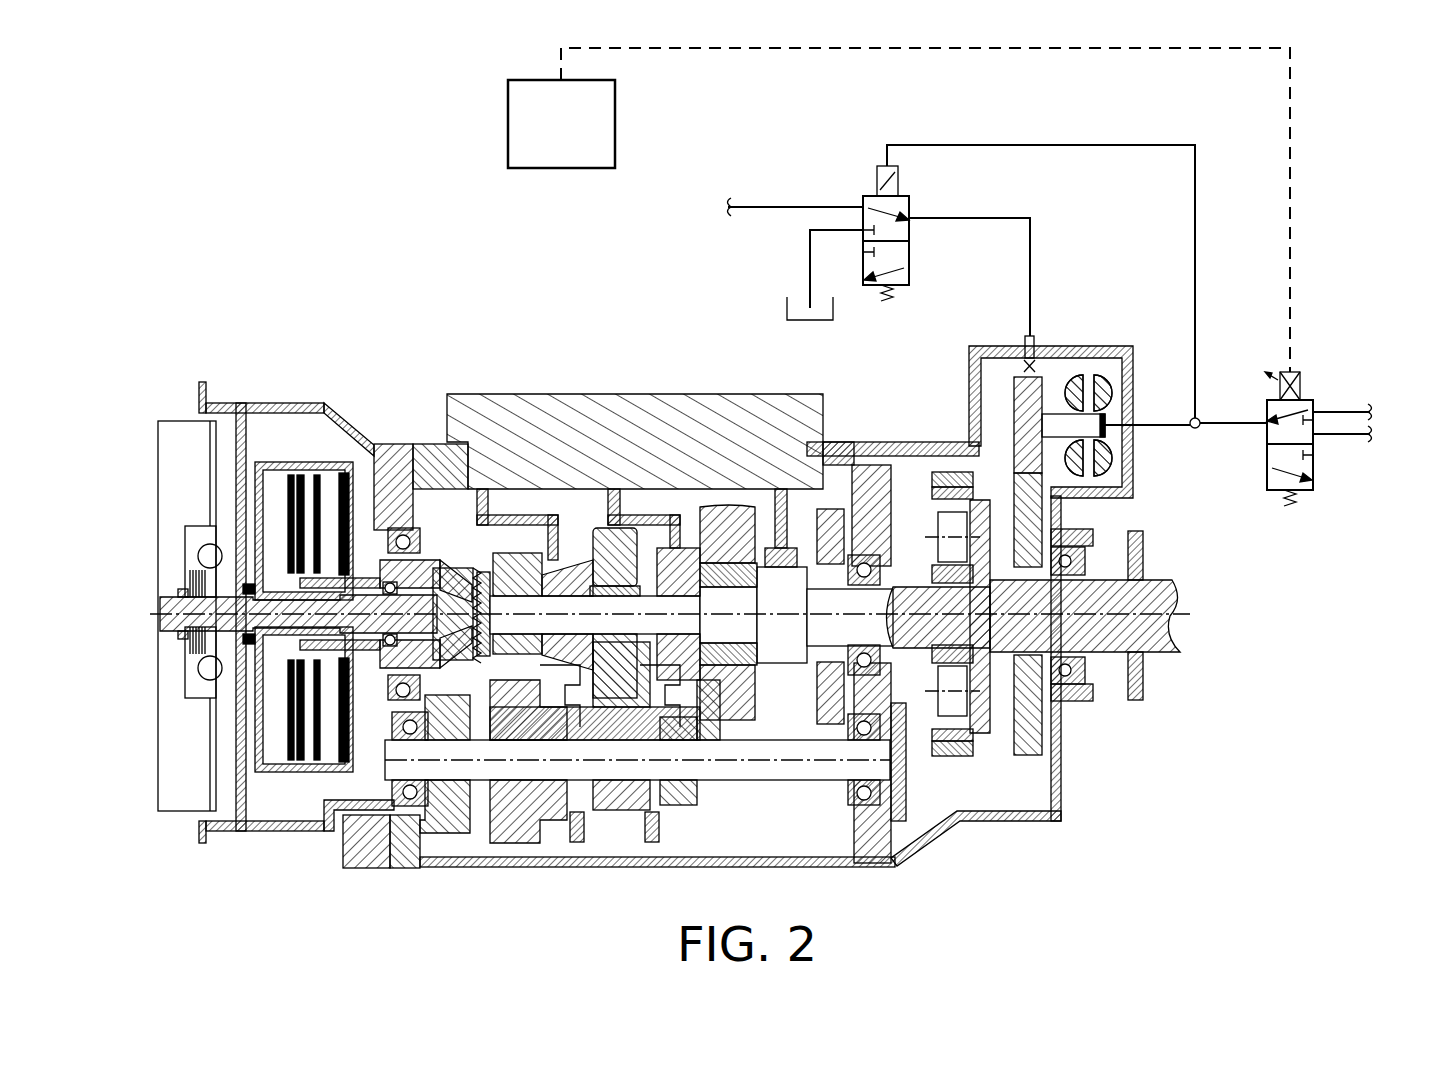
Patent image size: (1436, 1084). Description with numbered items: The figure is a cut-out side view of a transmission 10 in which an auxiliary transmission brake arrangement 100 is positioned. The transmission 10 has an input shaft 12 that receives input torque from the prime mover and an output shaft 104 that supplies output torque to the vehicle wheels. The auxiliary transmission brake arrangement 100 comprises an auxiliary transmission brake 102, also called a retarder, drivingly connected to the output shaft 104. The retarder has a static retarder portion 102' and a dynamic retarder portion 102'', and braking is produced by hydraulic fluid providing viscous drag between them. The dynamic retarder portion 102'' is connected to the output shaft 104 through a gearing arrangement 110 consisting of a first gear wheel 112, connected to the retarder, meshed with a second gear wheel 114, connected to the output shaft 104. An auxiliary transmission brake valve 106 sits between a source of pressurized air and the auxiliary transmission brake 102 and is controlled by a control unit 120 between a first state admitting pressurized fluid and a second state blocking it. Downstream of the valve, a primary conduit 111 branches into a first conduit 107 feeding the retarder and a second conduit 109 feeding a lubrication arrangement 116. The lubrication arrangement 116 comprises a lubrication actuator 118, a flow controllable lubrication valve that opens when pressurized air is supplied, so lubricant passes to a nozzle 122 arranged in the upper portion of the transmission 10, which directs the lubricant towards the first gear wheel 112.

The transmission 10 is at (390, 248).
The input shaft 12 is at (160, 608).
The auxiliary transmission brake arrangement 100 is at (1325, 350).
The auxiliary transmission brake 102 is at (1109, 371).
The static retarder portion 102' is at (1132, 384).
The dynamic retarder portion 102'' is at (1103, 358).
The output shaft 104 is at (1140, 628).
The auxiliary transmission brake valve 106 is at (1340, 389).
The first conduit 107 is at (1159, 425).
The second conduit 109 is at (978, 145).
The gearing arrangement 110 is at (1002, 444).
The primary conduit 111 is at (1233, 423).
The first gear wheel 112 is at (1013, 418).
The second gear wheel 114 is at (1046, 712).
The lubrication arrangement 116 is at (828, 130).
The lubrication actuator 118 is at (815, 180).
The control unit 120 is at (508, 125).
The nozzle 122 is at (1028, 338).